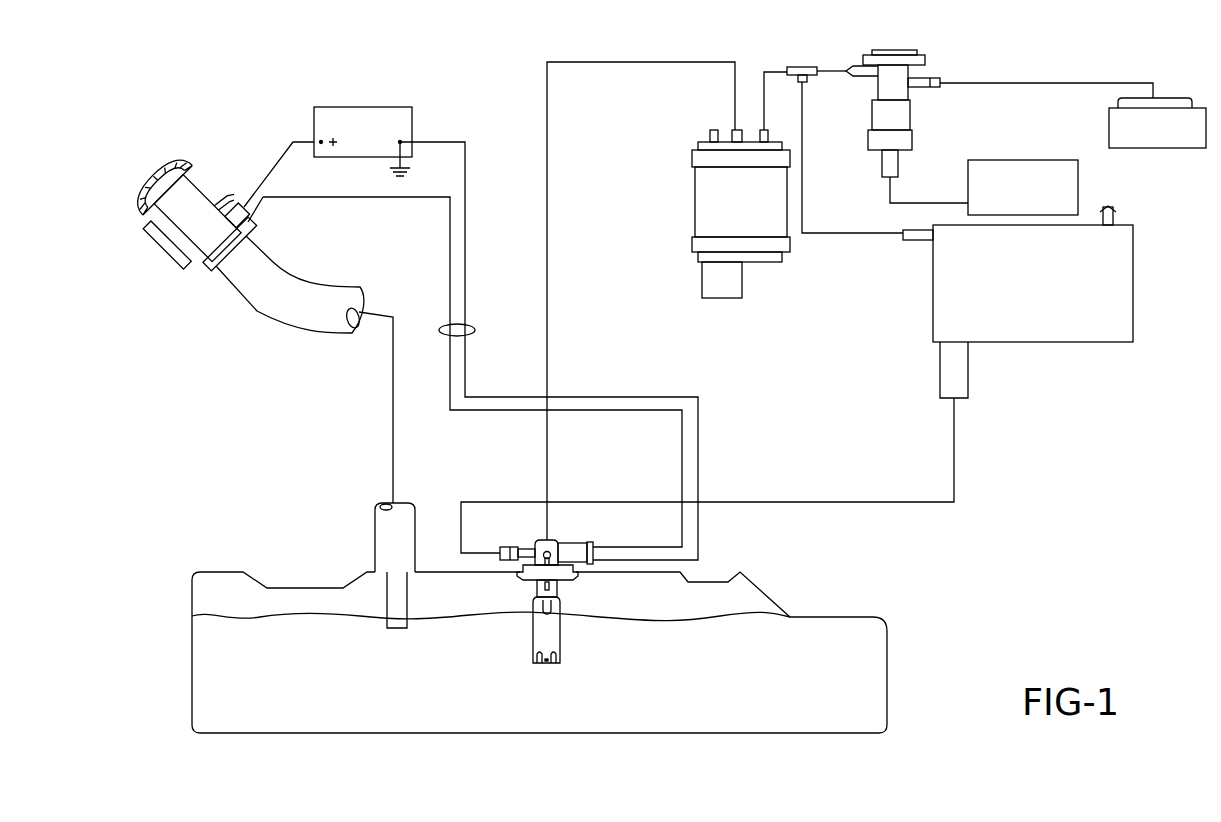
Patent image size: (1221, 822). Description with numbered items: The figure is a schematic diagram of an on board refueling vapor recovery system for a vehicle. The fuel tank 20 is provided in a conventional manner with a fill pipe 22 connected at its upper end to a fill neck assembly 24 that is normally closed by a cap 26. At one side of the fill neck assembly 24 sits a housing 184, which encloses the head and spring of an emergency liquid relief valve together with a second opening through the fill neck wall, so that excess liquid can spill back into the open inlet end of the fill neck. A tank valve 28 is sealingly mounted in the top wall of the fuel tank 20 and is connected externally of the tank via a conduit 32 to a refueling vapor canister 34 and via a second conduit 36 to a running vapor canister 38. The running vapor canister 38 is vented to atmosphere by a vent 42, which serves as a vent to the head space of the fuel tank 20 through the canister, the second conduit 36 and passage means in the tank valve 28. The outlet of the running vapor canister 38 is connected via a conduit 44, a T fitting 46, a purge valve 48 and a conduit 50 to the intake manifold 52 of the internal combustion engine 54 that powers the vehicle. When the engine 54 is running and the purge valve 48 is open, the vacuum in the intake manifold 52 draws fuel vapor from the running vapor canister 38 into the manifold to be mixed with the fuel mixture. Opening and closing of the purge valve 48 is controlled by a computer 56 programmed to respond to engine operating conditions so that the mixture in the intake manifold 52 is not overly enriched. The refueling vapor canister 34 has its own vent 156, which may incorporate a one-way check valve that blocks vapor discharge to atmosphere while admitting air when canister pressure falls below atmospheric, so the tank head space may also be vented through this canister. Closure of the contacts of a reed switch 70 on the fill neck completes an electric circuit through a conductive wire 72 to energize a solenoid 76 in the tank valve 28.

The fuel tank 20 is at (873, 632).
The fill pipe 22 is at (318, 322).
The fill neck assembly 24 is at (202, 240).
The cap 26 is at (160, 170).
The tank valve 28 is at (528, 535).
The conduit 32 is at (905, 503).
The refueling vapor canister 34 is at (1088, 335).
The second conduit 36 is at (549, 268).
The running vapor canister 38 is at (692, 207).
The vent 42 is at (712, 130).
The conduit 44 is at (767, 69).
The T fitting 46 is at (806, 64).
The purge valve 48 is at (948, 33).
The conduit 50 is at (975, 83).
The intake manifold 52 is at (1182, 98).
The internal combustion engine 54 is at (1166, 146).
The computer 56 is at (993, 160).
The reed switch 70 is at (252, 204).
The conductive wire 72 is at (448, 336).
The solenoid 76 is at (596, 558).
The vent 156 is at (1116, 209).
The housing 184 is at (172, 246).